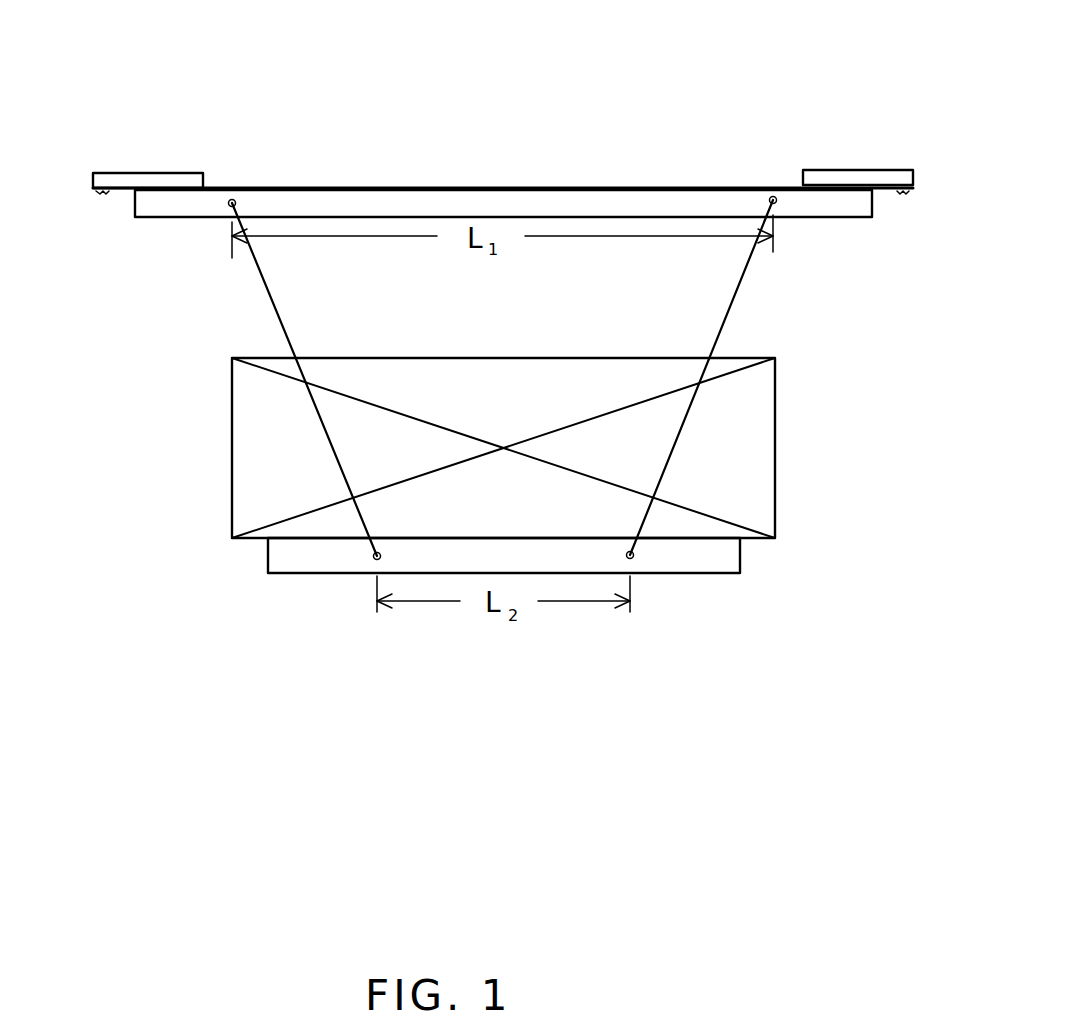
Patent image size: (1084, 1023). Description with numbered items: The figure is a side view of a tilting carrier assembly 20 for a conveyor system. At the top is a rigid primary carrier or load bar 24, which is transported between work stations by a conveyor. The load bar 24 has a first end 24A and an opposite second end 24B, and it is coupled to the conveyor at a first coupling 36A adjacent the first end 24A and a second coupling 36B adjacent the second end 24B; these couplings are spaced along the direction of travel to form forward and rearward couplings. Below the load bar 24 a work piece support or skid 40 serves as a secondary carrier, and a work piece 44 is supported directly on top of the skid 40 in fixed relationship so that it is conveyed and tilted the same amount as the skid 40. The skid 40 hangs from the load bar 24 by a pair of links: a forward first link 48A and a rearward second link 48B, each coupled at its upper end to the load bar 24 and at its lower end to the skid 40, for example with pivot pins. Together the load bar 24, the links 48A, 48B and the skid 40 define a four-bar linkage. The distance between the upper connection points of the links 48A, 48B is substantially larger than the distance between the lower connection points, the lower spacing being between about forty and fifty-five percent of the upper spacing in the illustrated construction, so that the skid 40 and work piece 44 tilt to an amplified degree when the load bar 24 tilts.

The tilting carrier assembly 20 is at (215, 713).
The load bar 24 is at (478, 197).
The first end 24A is at (886, 128).
The second end 24B is at (133, 126).
The first coupling 36A is at (858, 176).
The second coupling 36B is at (148, 179).
The skid 40 is at (717, 557).
The work piece 44 is at (742, 466).
The first link 48A is at (728, 314).
The second link 48B is at (283, 315).